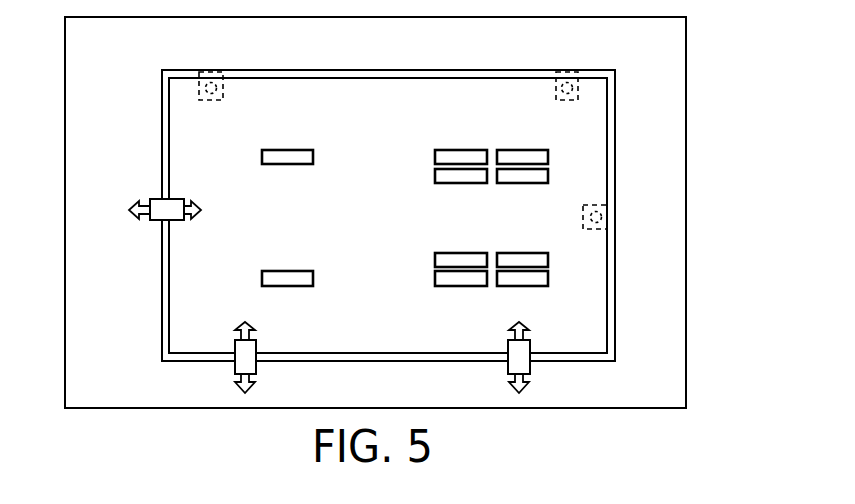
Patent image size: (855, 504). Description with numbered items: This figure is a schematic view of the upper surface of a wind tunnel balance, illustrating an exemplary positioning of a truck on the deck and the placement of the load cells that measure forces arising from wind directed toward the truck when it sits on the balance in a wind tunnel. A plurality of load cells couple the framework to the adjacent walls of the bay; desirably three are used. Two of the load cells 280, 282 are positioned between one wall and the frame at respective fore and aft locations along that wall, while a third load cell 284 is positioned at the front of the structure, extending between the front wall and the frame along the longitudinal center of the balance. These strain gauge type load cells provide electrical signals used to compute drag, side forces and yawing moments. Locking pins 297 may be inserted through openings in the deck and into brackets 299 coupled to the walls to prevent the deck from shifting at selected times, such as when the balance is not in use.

The load cell 280 is at (520, 358).
The load cell 282 is at (247, 358).
The load cell 284 is at (163, 208).
The locking pin 297 is at (213, 82).
The bracket 299 is at (223, 97).